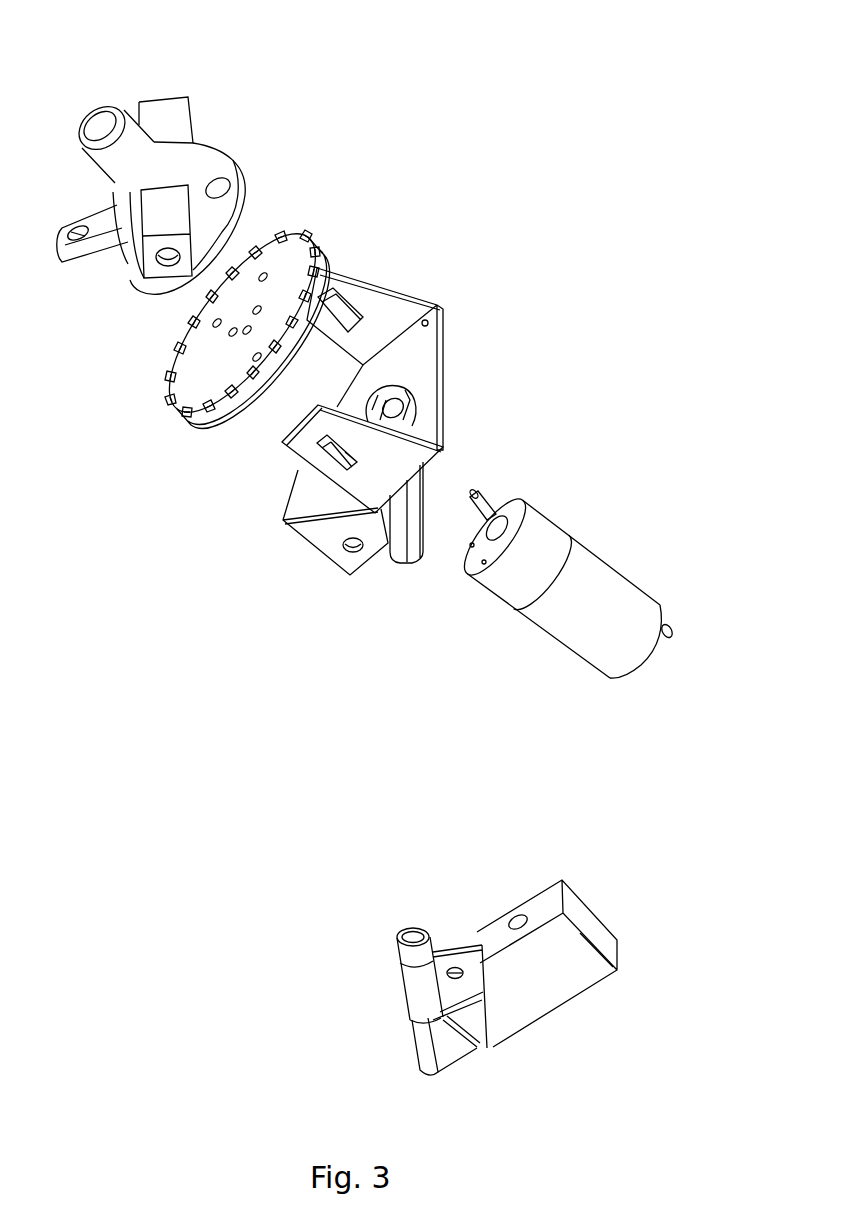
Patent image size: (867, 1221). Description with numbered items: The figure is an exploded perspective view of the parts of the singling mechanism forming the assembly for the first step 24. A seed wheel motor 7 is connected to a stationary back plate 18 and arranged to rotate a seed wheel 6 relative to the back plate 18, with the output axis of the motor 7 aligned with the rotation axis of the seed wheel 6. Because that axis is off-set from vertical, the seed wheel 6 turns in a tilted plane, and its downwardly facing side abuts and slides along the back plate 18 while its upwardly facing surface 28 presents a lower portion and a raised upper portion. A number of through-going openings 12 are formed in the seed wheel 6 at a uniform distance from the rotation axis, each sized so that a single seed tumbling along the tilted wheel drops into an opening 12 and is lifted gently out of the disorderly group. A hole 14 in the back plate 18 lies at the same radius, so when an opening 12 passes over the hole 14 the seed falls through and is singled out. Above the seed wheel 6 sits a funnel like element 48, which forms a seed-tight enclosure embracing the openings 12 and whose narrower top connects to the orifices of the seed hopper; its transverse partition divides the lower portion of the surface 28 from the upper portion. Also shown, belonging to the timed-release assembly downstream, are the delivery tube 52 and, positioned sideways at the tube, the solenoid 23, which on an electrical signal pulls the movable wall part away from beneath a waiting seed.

The first step 24 is at (433, 119).
The funnel like element 48 is at (200, 171).
The seed wheel 6 is at (274, 240).
The through-going openings 12 is at (266, 270).
The upwardly facing surface 28 is at (203, 360).
The stationary back plate 18 is at (420, 367).
The hole 14 is at (425, 418).
The seed wheel motor 7 is at (590, 595).
The solenoid 23 is at (543, 990).
The delivery tube 52 is at (413, 1035).